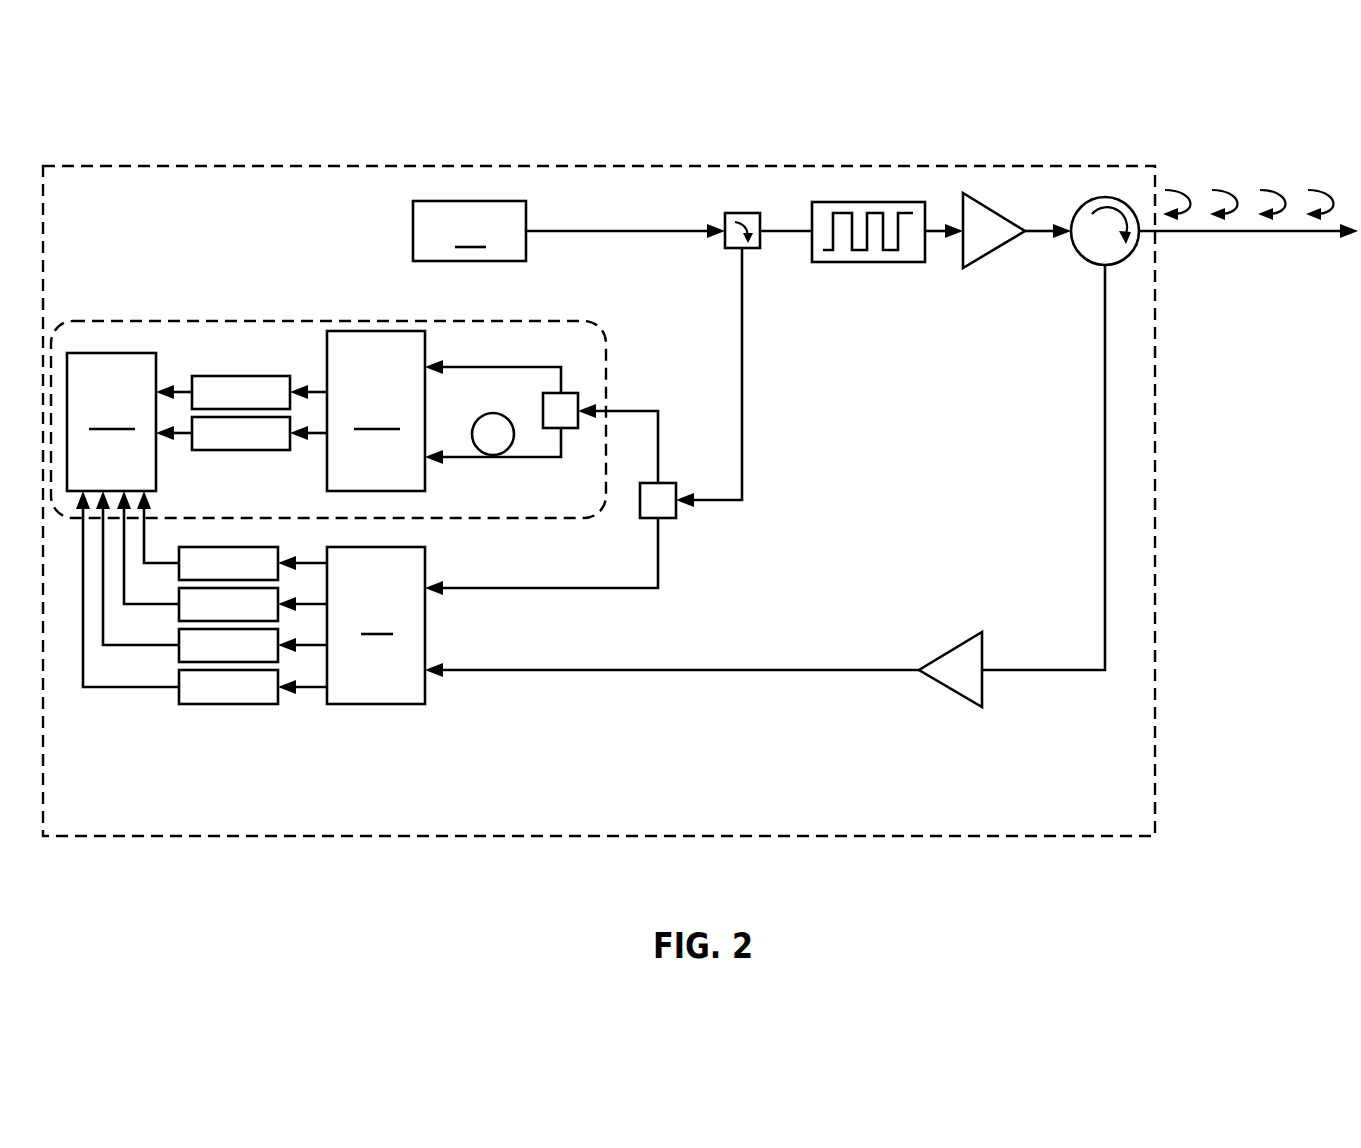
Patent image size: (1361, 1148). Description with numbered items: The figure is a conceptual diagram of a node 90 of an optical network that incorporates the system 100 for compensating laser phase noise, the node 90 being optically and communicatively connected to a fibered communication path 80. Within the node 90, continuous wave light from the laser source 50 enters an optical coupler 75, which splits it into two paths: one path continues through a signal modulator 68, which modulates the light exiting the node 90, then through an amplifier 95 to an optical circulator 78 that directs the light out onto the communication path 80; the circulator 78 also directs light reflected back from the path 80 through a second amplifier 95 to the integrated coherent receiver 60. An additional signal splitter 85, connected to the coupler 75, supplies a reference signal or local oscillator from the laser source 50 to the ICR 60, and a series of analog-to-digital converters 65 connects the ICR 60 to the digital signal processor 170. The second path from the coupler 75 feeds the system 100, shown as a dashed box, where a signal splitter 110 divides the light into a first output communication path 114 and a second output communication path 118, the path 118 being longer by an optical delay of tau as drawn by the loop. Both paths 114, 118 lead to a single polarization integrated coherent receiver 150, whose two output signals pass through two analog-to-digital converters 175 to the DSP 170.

The laser source 50 is at (469, 231).
The integrated coherent receiver 60 is at (376, 625).
The analog-to-digital converters 65 is at (246, 740).
The signal modulator 68 is at (873, 202).
The optical coupler 75 is at (762, 220).
The optical circulator 78 is at (1128, 278).
The fibered communication path 80 is at (1257, 232).
The signal splitter 85 is at (700, 526).
The node 90 is at (695, 165).
The amplifiers 95 is at (995, 250).
The system 100 is at (150, 320).
The signal splitter 110 is at (582, 378).
The first output communication path 114 is at (525, 367).
The second output communication path 118 is at (563, 445).
The single polarization integrated coherent receiver 150 is at (376, 411).
The digital signal processor 170 is at (111, 422).
The analog-to-digital converter 175 is at (246, 375).